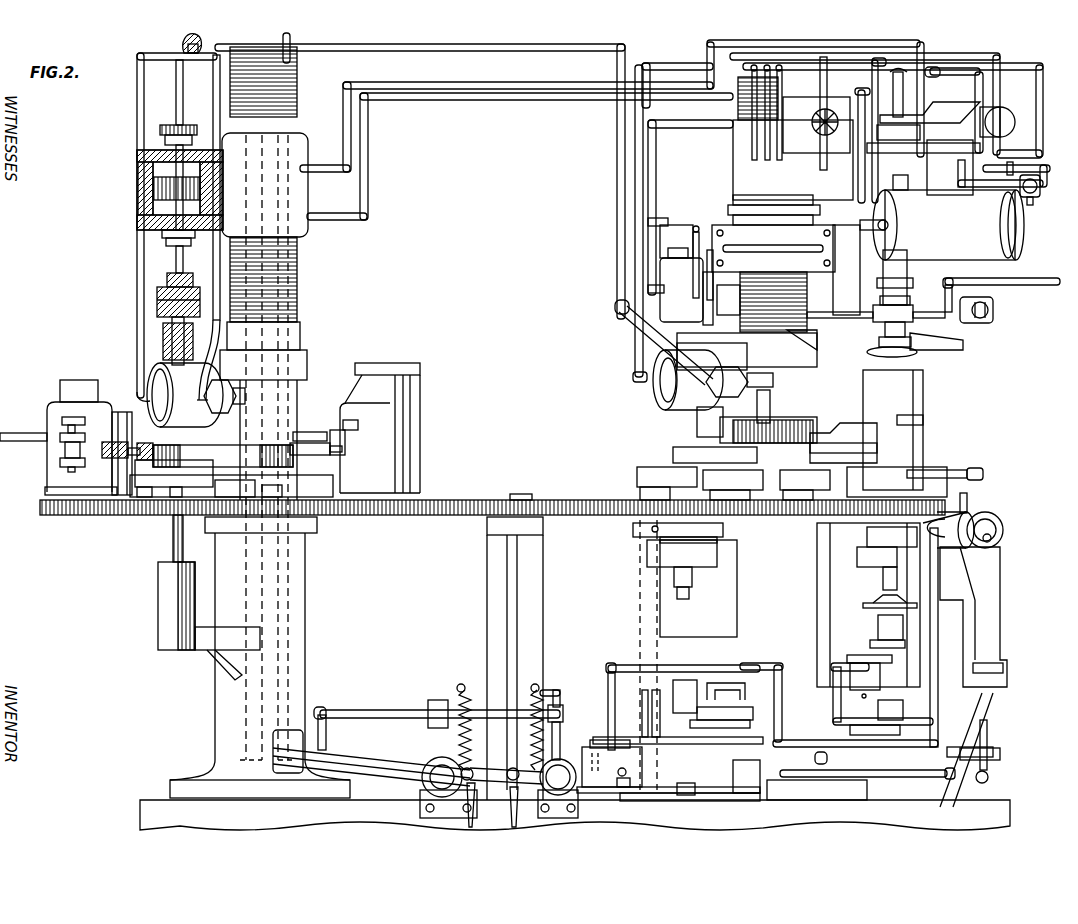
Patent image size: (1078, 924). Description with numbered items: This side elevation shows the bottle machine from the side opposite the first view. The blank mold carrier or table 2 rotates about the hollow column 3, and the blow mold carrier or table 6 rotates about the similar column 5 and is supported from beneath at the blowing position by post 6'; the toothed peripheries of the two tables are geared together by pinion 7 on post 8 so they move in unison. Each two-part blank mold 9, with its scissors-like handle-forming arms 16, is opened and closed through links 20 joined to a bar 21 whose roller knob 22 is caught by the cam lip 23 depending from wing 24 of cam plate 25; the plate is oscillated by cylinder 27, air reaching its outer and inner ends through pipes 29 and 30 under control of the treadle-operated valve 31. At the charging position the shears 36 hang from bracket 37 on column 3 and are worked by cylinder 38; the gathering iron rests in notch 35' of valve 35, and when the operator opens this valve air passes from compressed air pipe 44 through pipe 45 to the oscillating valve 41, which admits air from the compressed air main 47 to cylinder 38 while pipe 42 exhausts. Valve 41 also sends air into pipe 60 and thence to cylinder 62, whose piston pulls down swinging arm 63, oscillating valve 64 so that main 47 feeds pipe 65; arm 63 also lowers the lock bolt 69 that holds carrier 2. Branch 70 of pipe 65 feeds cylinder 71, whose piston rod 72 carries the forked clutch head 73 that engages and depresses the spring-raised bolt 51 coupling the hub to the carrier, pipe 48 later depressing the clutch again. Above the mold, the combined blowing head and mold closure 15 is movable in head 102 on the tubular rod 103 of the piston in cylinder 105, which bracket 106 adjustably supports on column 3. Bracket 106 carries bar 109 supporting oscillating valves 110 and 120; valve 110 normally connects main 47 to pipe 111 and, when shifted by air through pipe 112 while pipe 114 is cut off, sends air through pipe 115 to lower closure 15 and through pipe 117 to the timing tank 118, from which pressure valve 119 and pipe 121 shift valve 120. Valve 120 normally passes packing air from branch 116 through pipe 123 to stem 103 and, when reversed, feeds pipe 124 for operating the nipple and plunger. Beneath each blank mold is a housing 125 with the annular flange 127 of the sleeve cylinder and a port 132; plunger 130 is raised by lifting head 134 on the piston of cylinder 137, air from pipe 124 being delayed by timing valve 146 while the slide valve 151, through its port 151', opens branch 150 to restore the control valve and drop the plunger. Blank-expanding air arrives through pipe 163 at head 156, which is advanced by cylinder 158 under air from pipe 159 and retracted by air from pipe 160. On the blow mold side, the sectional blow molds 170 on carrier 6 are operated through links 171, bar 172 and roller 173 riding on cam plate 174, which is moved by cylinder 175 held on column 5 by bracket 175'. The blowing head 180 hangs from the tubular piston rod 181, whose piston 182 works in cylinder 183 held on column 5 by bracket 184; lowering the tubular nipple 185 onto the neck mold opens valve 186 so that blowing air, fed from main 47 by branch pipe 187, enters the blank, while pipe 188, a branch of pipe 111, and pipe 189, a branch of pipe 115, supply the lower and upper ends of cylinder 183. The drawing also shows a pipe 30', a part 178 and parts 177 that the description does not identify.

The inlet fitting 187 is at (184, 46).
The frame pipe 178 is at (138, 112).
The valve rod 181 is at (176, 98).
The pipe 30' is at (201, 227).
The pipe 30 is at (464, 415).
The pipe 47 is at (292, 75).
The pipe 189 is at (427, 78).
The pipe 188 is at (433, 101).
The valve housing 183 is at (165, 168).
The valve 182 is at (160, 191).
The cylinder body 184 is at (306, 190).
The gland 186 is at (167, 282).
The stuffing box 180 is at (157, 305).
The guide 185 is at (163, 340).
The coil 5 is at (298, 288).
The block 175' is at (286, 351).
The roller 175 is at (196, 395).
The standard 170 is at (210, 416).
The bearing 173 is at (175, 445).
The gear 174 is at (223, 456).
The shaft 171 is at (97, 458).
The base block 172 is at (175, 463).
The shaft 6' is at (154, 539).
The column 6 is at (281, 657).
The bed plate 7 is at (492, 497).
The guide rail 8 is at (543, 573).
The clamp 177 is at (420, 810).
The arm 31 is at (580, 806).
The rod 62 is at (662, 793).
The box 64 is at (612, 763).
The pin 65 is at (617, 777).
The rod 63 is at (642, 700).
The pipe 69 is at (648, 650).
The bracket 73 is at (716, 696).
The bar 72 is at (735, 722).
The block 71 is at (746, 776).
The bar 70 is at (735, 797).
The elbow 48 is at (831, 754).
The pipe 124 is at (855, 780).
The pin 151' is at (827, 699).
The pipe 151 is at (859, 695).
The plate 137 is at (870, 656).
The disc 134 is at (872, 607).
The frame 51 is at (862, 597).
The rod 130 is at (690, 592).
The rod 163 is at (938, 637).
The bracket 146 is at (1003, 718).
The brace 150 is at (958, 715).
The hub 159 is at (992, 538).
The disc 158 is at (970, 530).
The belt 156 is at (945, 520).
The post 160 is at (968, 496).
The rod 16 is at (930, 473).
The pillar 9 is at (923, 400).
The bar 21 is at (790, 458).
The block 20 is at (818, 438).
The bearing block 25 is at (790, 423).
The rod 24 is at (762, 402).
The slide 22 is at (722, 440).
The block 23 is at (700, 423).
The pulley 27 is at (713, 380).
The pipe 29 is at (635, 352).
The head 3 is at (815, 355).
The disc 15 is at (915, 356).
The arm 36 is at (963, 348).
The fitting 35 is at (986, 317).
The fitting 35' is at (1003, 304).
The pipe 45 is at (920, 305).
The valve box 102 is at (893, 298).
The pipe 44 is at (1018, 275).
The coil 37 is at (820, 296).
The box 38 is at (700, 287).
The block 41 is at (672, 240).
The rod 42 is at (698, 245).
The pipe 60 is at (652, 193).
The casing 106 is at (740, 160).
The coil 114 is at (765, 135).
The wheel 110 is at (816, 125).
The rod 112 is at (830, 90).
The frame 111 is at (1036, 112).
The rod 103 is at (905, 82).
The bar 109 is at (930, 118).
The pipe 115 is at (925, 48).
The pipe 123 is at (984, 90).
The wheel 120 is at (998, 122).
The block 105 is at (927, 170).
The pipe 116 is at (958, 170).
The pipe 121 is at (957, 184).
The axle 117 is at (877, 215).
The cylinder 118 is at (948, 225).
The valve 119 is at (1031, 198).
The box 125 is at (717, 552).
The pin 132 is at (650, 530).
The shaft 127 is at (693, 572).
The frame 2 is at (603, 515).